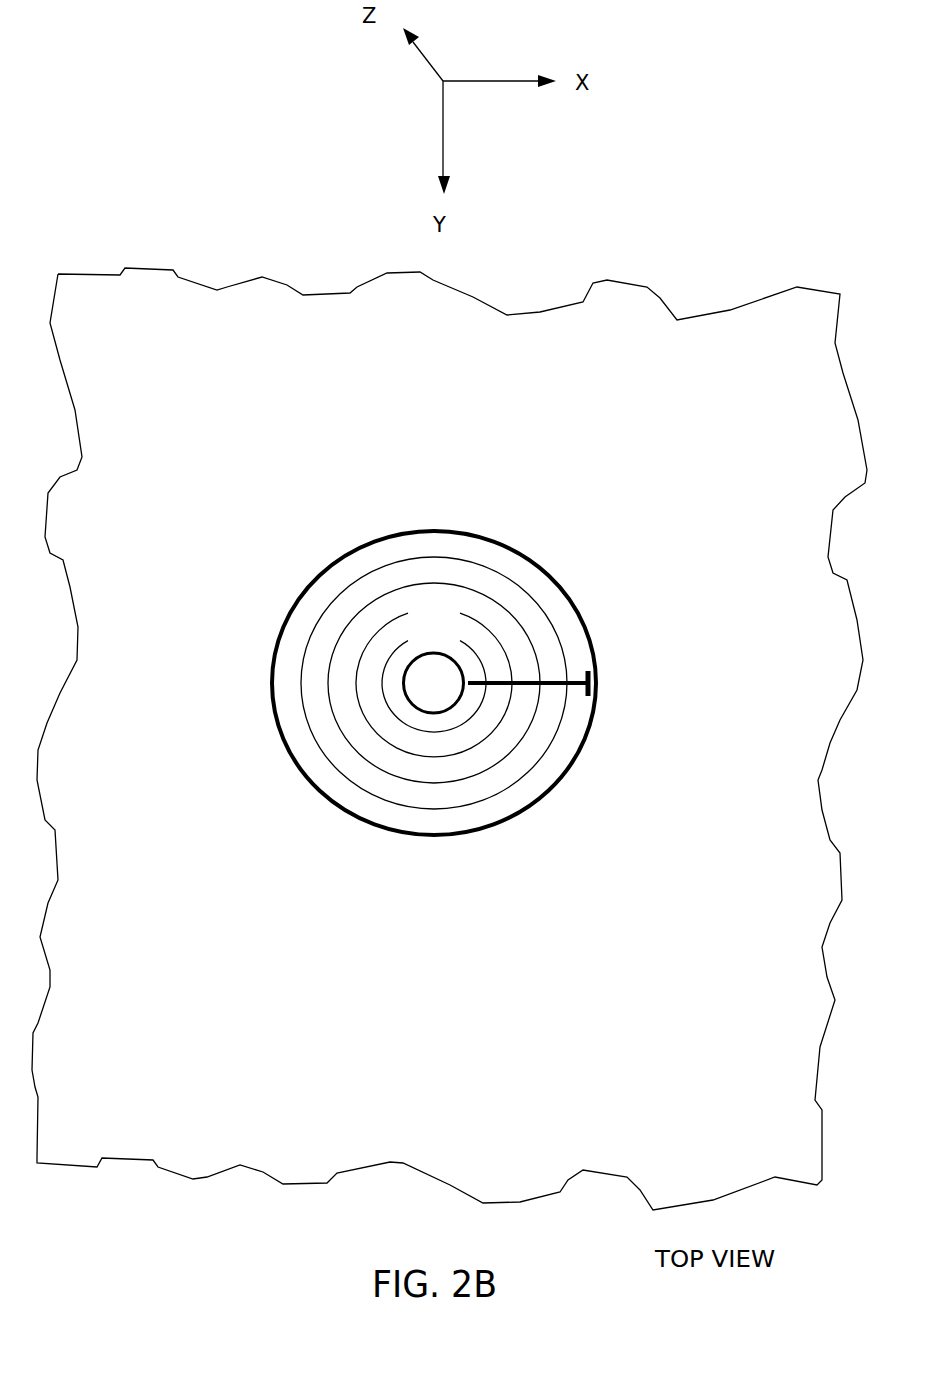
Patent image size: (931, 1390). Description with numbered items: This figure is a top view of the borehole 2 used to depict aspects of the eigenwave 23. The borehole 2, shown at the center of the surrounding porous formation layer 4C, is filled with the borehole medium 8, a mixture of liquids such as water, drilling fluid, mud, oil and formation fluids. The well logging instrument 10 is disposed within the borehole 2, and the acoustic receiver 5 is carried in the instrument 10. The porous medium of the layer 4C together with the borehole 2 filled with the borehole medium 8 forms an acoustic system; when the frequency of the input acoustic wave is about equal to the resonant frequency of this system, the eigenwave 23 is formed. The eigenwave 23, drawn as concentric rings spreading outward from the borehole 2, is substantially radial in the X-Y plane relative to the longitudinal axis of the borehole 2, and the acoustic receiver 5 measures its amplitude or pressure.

The borehole 2 is at (395, 608).
The acoustic receiver 5 is at (584, 672).
The borehole medium 8 is at (437, 638).
The well logging instrument 10 is at (396, 651).
The eigenwave 23 is at (407, 730).
The formation layer 4C is at (736, 415).